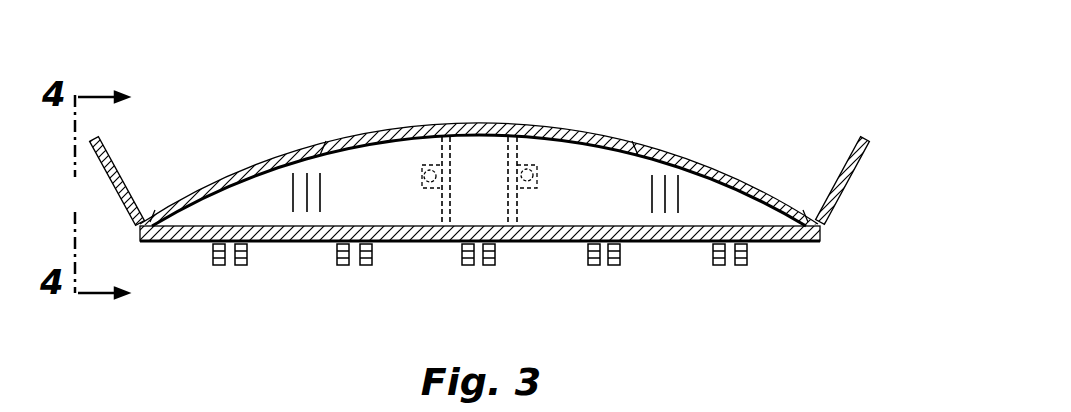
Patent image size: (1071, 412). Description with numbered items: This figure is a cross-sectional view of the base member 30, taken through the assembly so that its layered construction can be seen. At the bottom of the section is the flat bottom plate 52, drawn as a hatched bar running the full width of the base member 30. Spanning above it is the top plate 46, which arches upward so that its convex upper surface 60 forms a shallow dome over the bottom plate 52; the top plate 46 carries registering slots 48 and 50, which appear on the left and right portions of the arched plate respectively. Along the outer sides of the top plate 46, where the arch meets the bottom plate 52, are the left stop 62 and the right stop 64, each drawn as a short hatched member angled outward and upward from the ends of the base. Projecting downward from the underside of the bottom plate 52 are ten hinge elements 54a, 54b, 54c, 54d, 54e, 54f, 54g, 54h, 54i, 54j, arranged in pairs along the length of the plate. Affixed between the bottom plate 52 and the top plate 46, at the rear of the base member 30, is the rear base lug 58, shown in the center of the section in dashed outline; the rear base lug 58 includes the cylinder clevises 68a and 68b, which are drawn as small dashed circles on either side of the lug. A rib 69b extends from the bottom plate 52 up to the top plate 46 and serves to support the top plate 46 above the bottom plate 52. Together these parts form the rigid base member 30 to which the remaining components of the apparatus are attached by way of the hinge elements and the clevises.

The base member 30 is at (786, 154).
The top plate 46 is at (584, 130).
The registering slot 48 is at (267, 166).
The registering slot 50 is at (703, 164).
The bottom plate 52 is at (789, 243).
The hinge element 54a is at (213, 265).
The hinge element 54b is at (240, 265).
The hinge element 54c is at (342, 265).
The hinge element 54d is at (365, 265).
The hinge element 54e is at (465, 265).
The hinge element 54f is at (490, 265).
The hinge element 54g is at (592, 265).
The hinge element 54h is at (617, 265).
The hinge element 54i is at (718, 265).
The hinge element 54j is at (742, 265).
The rear base lug 58 is at (478, 177).
The convex upper surface 60 is at (376, 136).
The left stop 62 is at (118, 168).
The right stop 64 is at (843, 188).
The cylinder clevis 68a is at (420, 178).
The cylinder clevis 68b is at (537, 173).
The rib 69b is at (260, 200).